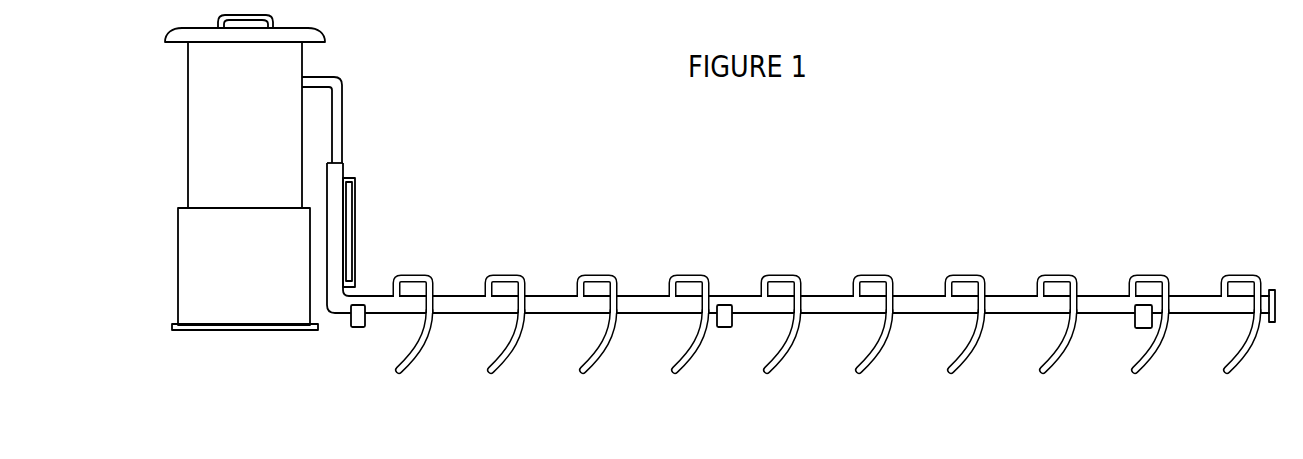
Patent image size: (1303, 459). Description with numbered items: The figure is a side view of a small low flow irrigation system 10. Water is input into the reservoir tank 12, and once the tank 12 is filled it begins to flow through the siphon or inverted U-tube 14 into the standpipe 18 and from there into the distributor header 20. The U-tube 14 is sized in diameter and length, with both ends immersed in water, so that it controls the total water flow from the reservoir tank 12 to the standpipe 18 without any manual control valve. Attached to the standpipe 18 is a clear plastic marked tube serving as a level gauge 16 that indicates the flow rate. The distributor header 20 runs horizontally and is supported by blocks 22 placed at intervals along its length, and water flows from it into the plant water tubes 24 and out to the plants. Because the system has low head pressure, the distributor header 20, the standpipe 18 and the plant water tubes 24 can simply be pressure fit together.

The low flow irrigation system 10 is at (597, 157).
The reservoir tank 12 is at (275, 77).
The siphon or U-tube 14 is at (342, 108).
The level gauge 16 is at (355, 205).
The standpipe 18 is at (333, 238).
The distributor header 20 is at (912, 296).
The blocks 22 is at (357, 330).
The plant water tubes 24 is at (1060, 275).